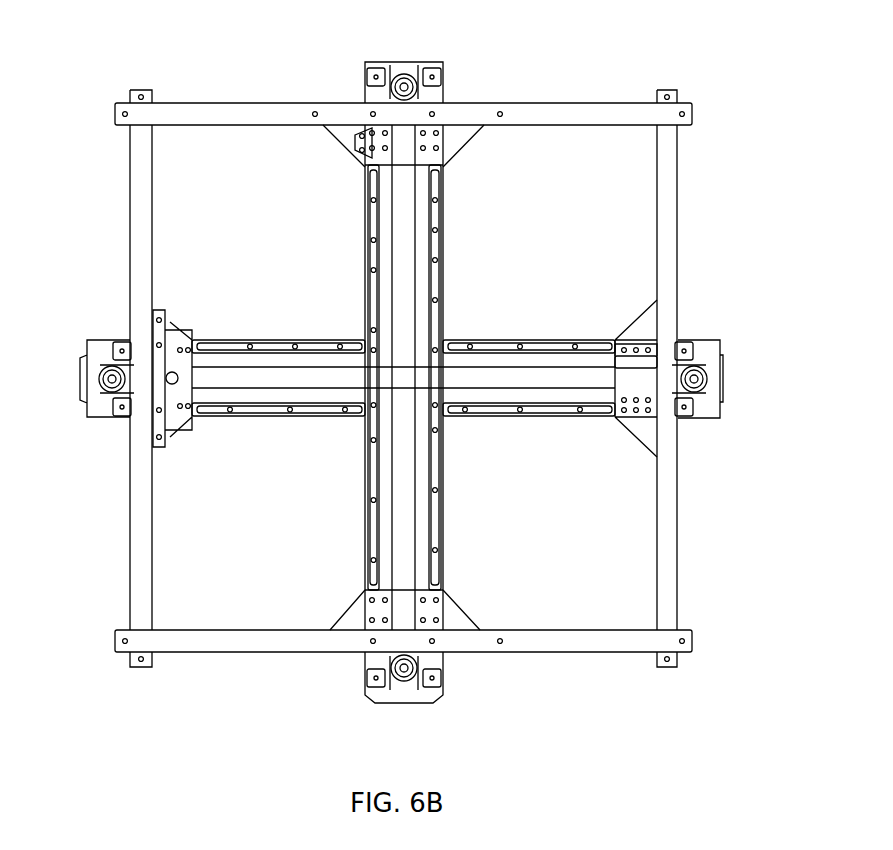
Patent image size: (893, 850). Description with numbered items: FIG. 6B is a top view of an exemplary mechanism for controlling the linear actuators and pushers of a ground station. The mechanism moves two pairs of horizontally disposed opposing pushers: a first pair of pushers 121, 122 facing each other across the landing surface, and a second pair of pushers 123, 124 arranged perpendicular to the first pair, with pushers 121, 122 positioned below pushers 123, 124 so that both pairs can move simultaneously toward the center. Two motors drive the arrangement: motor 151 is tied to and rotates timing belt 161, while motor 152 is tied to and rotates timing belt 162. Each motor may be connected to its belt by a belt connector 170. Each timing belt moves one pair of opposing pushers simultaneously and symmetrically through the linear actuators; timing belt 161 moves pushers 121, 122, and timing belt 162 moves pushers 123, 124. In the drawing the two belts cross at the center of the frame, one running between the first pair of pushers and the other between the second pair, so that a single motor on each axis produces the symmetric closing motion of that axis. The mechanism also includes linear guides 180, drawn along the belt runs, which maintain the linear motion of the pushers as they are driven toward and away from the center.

The pusher 121 is at (136, 510).
The pusher 122 is at (672, 522).
The pusher 123 is at (572, 110).
The pusher 124 is at (560, 640).
The motor 151 is at (98, 336).
The motor 152 is at (360, 684).
The timing belt 161 is at (254, 364).
The timing belt 162 is at (410, 290).
The belt connector 170 is at (383, 147).
The linear guide 180 is at (428, 488).